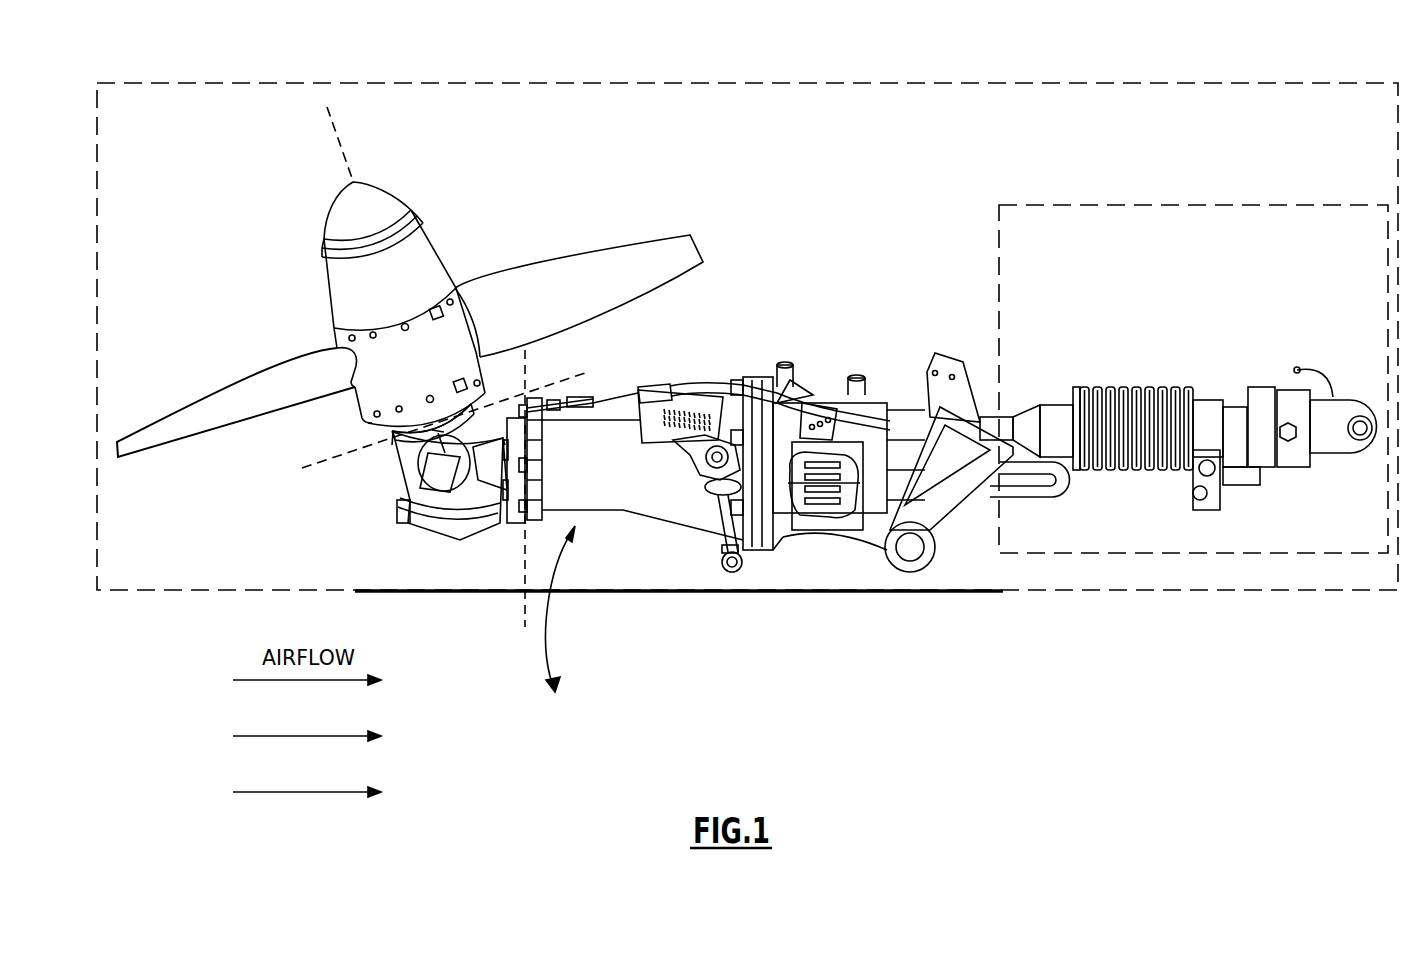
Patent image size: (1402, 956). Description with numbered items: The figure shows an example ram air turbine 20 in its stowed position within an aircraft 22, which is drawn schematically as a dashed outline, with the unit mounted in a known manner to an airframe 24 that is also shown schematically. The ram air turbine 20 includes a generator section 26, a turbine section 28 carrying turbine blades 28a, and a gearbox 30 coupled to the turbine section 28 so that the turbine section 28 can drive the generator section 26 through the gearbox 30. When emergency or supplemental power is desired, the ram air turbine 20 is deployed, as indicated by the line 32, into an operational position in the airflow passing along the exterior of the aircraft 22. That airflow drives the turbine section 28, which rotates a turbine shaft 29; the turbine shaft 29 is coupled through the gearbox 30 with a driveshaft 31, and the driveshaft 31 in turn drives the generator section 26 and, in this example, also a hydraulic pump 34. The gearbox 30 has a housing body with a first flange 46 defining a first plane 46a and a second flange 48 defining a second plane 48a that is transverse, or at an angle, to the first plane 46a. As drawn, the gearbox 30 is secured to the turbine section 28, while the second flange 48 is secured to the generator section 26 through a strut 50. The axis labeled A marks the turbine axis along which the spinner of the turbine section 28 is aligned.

The ram air turbine 20 is at (712, 342).
The aircraft 22 is at (648, 83).
The airframe 24 is at (999, 240).
The generator section 26 is at (826, 548).
The turbine section 28 is at (318, 292).
The turbine blades 28a is at (513, 285).
The turbine shaft 29 is at (457, 515).
The gearbox 30 is at (395, 448).
The driveshaft 31 is at (800, 520).
The deployment line 32 is at (545, 628).
The hydraulic pump 34 is at (915, 450).
The first flange 46 is at (392, 462).
The first plane 46a is at (580, 373).
The second flange 48 is at (505, 525).
The second plane 48a is at (525, 610).
The strut 50 is at (615, 510).
The propeller axis A is at (335, 123).